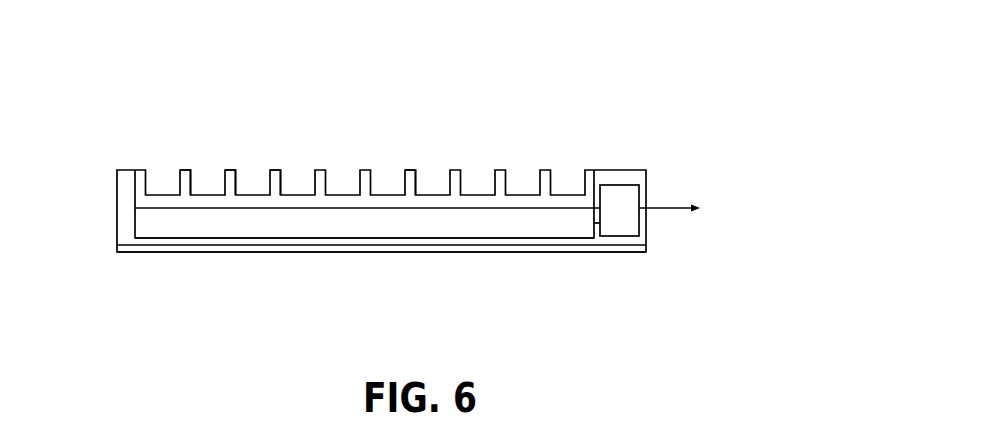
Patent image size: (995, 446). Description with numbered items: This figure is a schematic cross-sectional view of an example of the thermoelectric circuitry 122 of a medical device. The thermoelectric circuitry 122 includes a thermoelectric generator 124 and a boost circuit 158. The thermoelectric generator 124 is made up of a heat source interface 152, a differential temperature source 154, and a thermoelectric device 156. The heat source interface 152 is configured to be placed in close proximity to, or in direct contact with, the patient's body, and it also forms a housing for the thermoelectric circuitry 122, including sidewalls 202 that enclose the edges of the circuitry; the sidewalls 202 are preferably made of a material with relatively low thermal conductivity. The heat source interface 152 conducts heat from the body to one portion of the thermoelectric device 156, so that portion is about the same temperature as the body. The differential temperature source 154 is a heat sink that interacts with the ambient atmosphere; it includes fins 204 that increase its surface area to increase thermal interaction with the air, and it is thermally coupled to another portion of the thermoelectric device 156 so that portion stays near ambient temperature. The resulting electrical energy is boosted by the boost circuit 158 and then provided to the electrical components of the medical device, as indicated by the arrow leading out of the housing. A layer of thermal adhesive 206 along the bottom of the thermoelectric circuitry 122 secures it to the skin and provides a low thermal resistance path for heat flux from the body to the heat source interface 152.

The thermoelectric circuitry 122 is at (138, 67).
The thermoelectric generator 124 is at (326, 112).
The fins 204 is at (277, 170).
The differential temperature source 154 is at (410, 180).
The boost circuit 158 is at (615, 193).
The thermoelectric device 156 is at (483, 225).
The heat source interface 152 is at (302, 242).
The thermal adhesive 206 is at (163, 254).
The sidewalls 202 is at (117, 208).